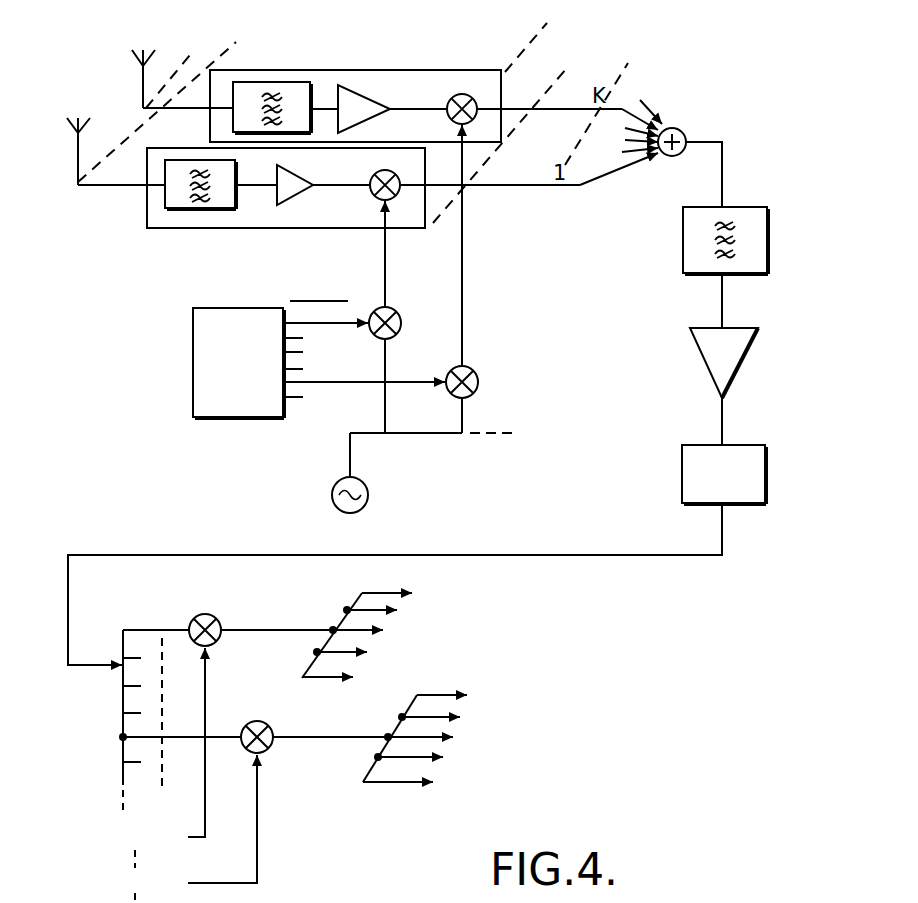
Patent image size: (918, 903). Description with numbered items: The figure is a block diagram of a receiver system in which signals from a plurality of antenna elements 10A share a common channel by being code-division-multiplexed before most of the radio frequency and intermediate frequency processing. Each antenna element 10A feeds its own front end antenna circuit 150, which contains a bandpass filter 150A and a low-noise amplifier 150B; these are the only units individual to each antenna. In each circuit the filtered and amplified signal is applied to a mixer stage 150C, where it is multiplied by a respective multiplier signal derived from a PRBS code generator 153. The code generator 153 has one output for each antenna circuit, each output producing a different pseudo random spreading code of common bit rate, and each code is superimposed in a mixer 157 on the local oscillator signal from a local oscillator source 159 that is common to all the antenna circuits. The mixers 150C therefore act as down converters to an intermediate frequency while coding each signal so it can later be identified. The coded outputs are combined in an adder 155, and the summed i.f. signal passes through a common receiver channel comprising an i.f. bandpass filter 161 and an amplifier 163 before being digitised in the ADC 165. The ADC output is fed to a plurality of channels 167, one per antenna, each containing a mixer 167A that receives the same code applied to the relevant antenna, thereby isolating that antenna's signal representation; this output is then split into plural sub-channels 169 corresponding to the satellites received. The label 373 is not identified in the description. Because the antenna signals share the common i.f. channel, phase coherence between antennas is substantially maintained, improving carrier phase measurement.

The antenna element 10A is at (127, 86).
The front end antenna circuit 150 is at (392, 70).
The bandpass filter 150A is at (192, 210).
The low-noise amplifier 150B is at (300, 203).
The mixer stage 150C is at (466, 96).
The PRBS code generator 153 is at (193, 383).
The adder 155 is at (686, 130).
The mixer 157 is at (394, 311).
The local oscillator source 159 is at (368, 491).
The i.f. bandpass filter 161 is at (768, 214).
The amplifier 163 is at (757, 343).
The ADC 165 is at (765, 462).
The channel 167 is at (133, 621).
The mixer 167A is at (220, 620).
The sub-channel 169 is at (386, 585).
The antenna circuits 373 is at (329, 34).